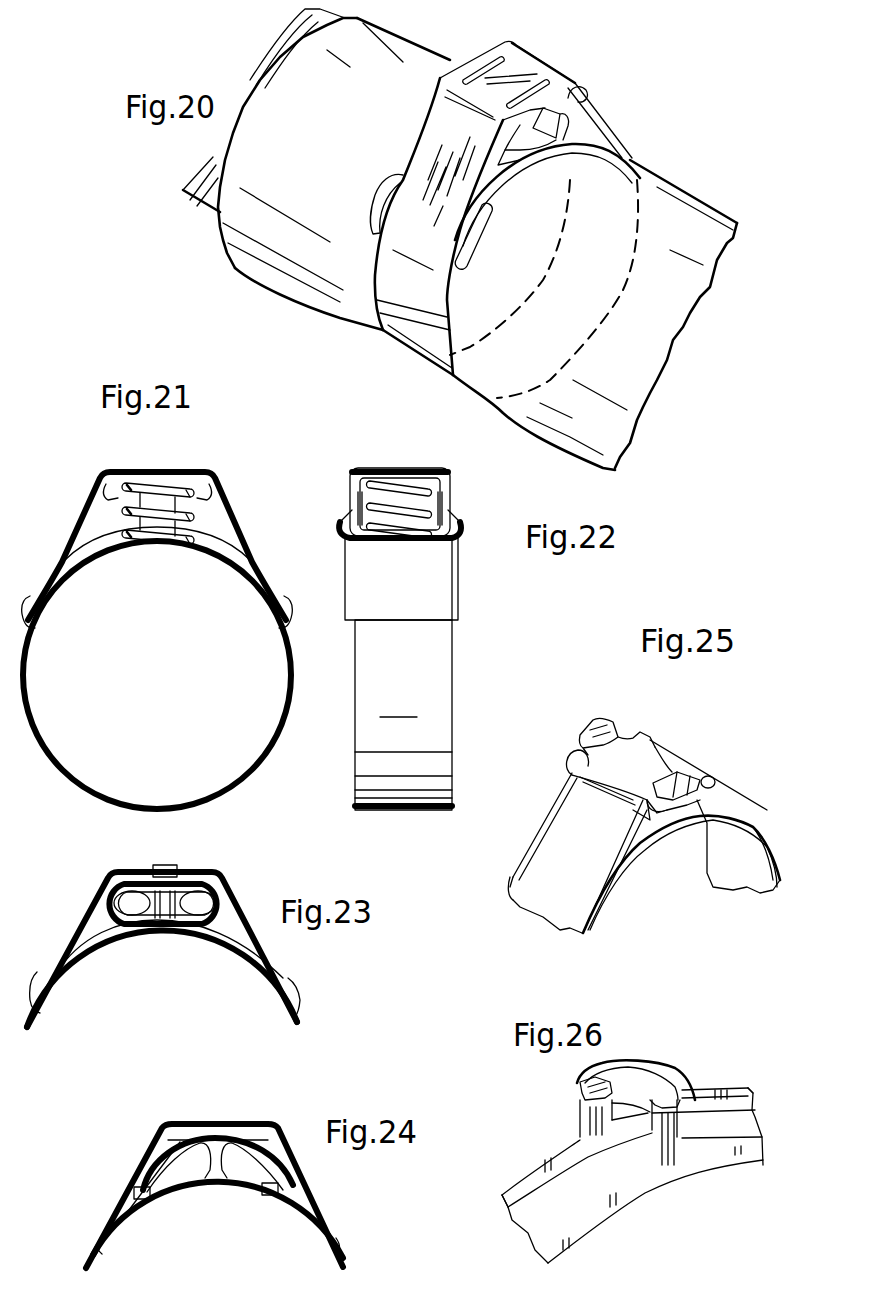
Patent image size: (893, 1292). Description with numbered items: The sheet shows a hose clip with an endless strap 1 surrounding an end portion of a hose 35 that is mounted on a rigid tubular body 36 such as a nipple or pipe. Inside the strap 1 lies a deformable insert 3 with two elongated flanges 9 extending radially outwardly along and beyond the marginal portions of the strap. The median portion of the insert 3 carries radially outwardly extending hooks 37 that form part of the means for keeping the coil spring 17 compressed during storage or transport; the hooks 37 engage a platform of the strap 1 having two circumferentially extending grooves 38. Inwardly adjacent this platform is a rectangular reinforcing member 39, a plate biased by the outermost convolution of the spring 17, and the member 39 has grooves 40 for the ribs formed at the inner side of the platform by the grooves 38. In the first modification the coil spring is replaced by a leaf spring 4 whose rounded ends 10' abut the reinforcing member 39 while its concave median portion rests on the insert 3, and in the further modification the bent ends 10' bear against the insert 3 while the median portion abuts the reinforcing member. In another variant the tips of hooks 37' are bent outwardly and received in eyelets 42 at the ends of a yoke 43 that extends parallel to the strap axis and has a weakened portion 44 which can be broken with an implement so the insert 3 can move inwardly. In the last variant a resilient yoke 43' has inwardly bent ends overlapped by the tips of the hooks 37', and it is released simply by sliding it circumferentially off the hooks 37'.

In FIG. 20, the strap 1 is at (407, 332).
In FIG. 21, the strap 1 is at (78, 520).
In FIG. 22, the strap 1 is at (454, 692).
In FIG. 23, the strap 1 is at (87, 912).
In FIG. 24, the strap 1 is at (127, 1192).
In FIG. 25, the strap 1 is at (553, 807).
In FIG. 20, the insert 3 is at (511, 202).
In FIG. 21, the insert 3 is at (95, 556).
In FIG. 22, the insert 3 is at (460, 585).
In FIG. 23, the insert 3 is at (90, 958).
In FIG. 24, the insert 3 is at (193, 1193).
In FIG. 25, the insert 3 is at (618, 883).
In FIG. 26, the insert 3 is at (641, 1205).
In FIG. 23, the leaf spring 4 is at (178, 927).
In FIG. 24, the leaf spring 4 is at (262, 1127).
In FIG. 20, the flanges 9 is at (374, 213).
In FIG. 21, the flanges 9 is at (222, 548).
In FIG. 23, the flanges 9 is at (43, 973).
In FIG. 24, the flanges 9 is at (100, 1235).
In FIG. 25, the flanges 9 is at (518, 872).
In FIG. 26, the flanges 9 is at (527, 1168).
In FIG. 23, the rounded ends 10' is at (168, 870).
In FIG. 24, the rounded ends 10' is at (208, 1199).
In FIG. 20, the spring 17 is at (556, 112).
In FIG. 21, the spring 17 is at (104, 488).
In FIG. 20, the hose 35 is at (683, 195).
In FIG. 20, the rigid tubular body 36 is at (205, 198).
In FIG. 20, the hooks 37 is at (578, 133).
In FIG. 22, the hooks 37 is at (431, 527).
In FIG. 23, the hooks 37 is at (143, 882).
In FIG. 24, the hooks 37 is at (218, 1108).
In FIG. 25, the hooks 37' is at (660, 737).
In FIG. 26, the hooks 37' is at (647, 1079).
In FIG. 20, the grooves 38 is at (478, 70).
In FIG. 22, the grooves 38 is at (365, 468).
In FIG. 20, the reinforcing member 39 is at (570, 95).
In FIG. 21, the reinforcing member 39 is at (200, 470).
In FIG. 22, the reinforcing member 39 is at (392, 468).
In FIG. 23, the reinforcing member 39 is at (157, 887).
In FIG. 25, the reinforcing member 39 is at (717, 778).
In FIG. 22, the grooves 40 is at (352, 490).
In FIG. 25, the eyelets 42 is at (577, 750).
In FIG. 25, the yoke 43 is at (677, 735).
In FIG. 26, the yoke 43' is at (646, 1057).
In FIG. 25, the weakened portion 44 is at (643, 738).